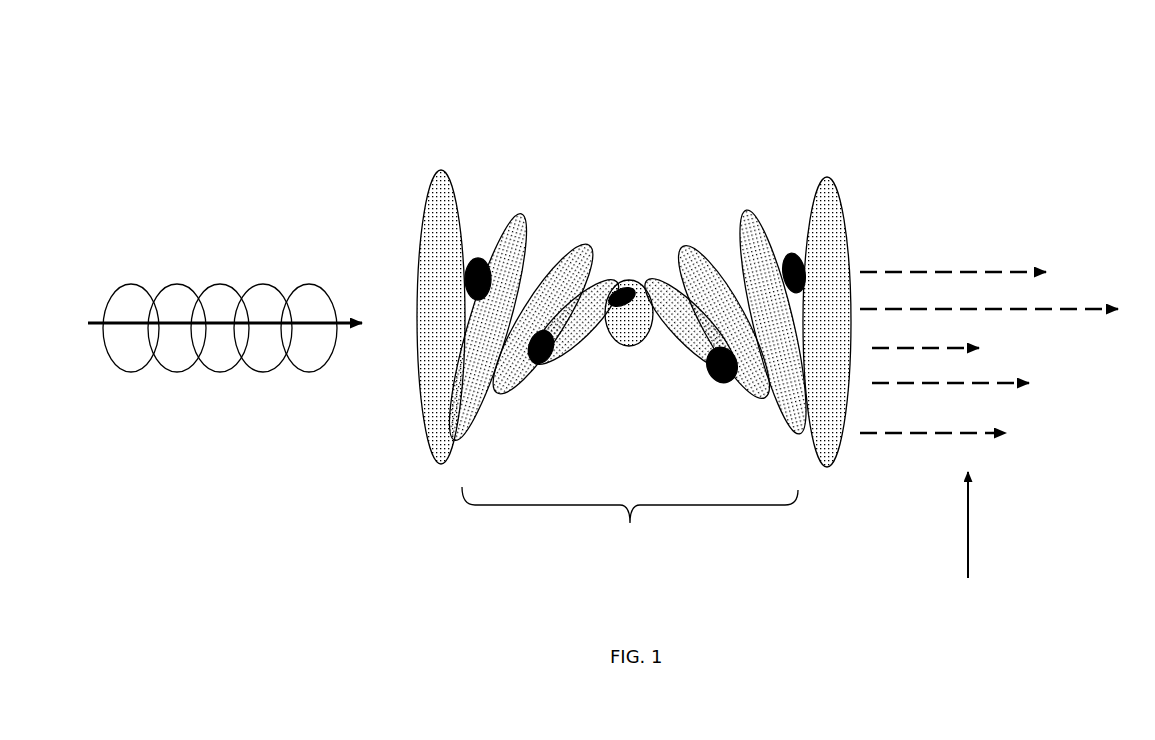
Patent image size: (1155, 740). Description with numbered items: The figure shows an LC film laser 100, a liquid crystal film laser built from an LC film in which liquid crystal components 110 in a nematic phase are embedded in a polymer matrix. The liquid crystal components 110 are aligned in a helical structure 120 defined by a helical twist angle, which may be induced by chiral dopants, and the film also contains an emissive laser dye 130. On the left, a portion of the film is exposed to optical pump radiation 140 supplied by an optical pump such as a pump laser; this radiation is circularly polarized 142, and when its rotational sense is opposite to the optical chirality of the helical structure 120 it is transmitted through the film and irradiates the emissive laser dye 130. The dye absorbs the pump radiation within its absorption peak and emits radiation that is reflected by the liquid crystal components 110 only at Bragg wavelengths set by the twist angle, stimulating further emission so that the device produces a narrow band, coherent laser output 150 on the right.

The LC film laser 100 is at (590, 291).
The liquid crystal components 110 is at (764, 194).
The helical structure 120 is at (630, 521).
The emissive laser dye 130 is at (463, 294).
The optical pump radiation 140 is at (223, 316).
The circularly polarized pump radiation 142 is at (303, 278).
The laser output 150 is at (989, 444).